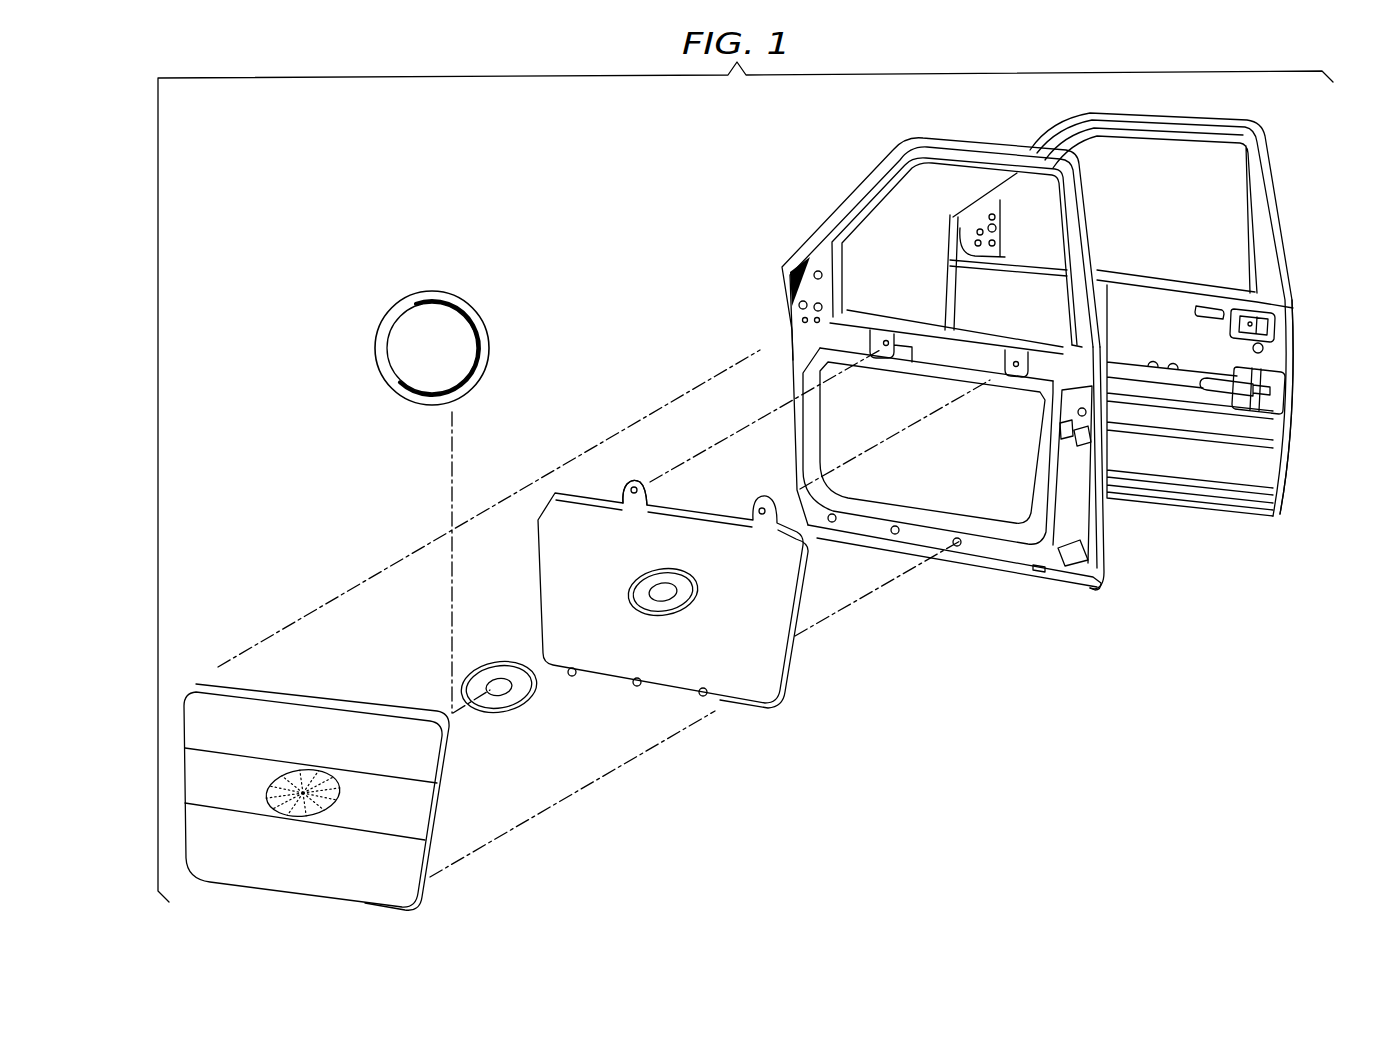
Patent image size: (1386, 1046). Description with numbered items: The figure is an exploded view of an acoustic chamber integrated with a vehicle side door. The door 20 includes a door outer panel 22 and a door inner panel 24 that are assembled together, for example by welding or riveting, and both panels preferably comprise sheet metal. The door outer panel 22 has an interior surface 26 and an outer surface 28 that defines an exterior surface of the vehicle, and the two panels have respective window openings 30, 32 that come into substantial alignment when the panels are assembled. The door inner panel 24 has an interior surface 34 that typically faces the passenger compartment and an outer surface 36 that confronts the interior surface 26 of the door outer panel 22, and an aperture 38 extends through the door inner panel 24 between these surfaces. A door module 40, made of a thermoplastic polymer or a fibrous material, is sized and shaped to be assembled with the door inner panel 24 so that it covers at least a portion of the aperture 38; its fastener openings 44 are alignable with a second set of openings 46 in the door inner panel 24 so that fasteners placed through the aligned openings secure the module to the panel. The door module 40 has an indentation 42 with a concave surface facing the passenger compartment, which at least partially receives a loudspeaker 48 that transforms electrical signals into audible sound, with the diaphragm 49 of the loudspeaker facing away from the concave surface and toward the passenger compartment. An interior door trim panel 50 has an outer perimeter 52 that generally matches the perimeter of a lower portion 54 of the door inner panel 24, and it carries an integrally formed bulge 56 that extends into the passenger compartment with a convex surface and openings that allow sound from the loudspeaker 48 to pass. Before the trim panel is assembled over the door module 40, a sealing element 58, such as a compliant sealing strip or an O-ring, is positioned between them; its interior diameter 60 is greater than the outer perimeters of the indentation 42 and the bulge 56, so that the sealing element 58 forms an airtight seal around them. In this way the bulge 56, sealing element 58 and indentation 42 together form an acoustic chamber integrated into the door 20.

The door 20 is at (1010, 130).
The door outer panel 22 is at (1105, 118).
The door inner panel 24 is at (893, 158).
The interior surface 26 is at (1236, 482).
The outer surface 28 is at (1288, 487).
The window opening 30 is at (1208, 156).
The window opening 32 is at (880, 212).
The interior surface 34 is at (982, 546).
The outer surface 36 is at (1108, 536).
The aperture 38 is at (918, 392).
The door module 40 is at (552, 592).
The indentation 42 is at (638, 592).
The fastener openings 44 is at (640, 492).
The second set of openings 46 is at (1020, 372).
The loudspeaker 48 is at (494, 667).
The diaphragm 49 is at (494, 712).
The interior door trim panel 50 is at (313, 745).
The outer perimeter 52 is at (428, 882).
The lower portion 54 is at (770, 375).
The bulge 56 is at (277, 810).
The sealing element 58 is at (432, 293).
The interior diameter 60 is at (417, 307).